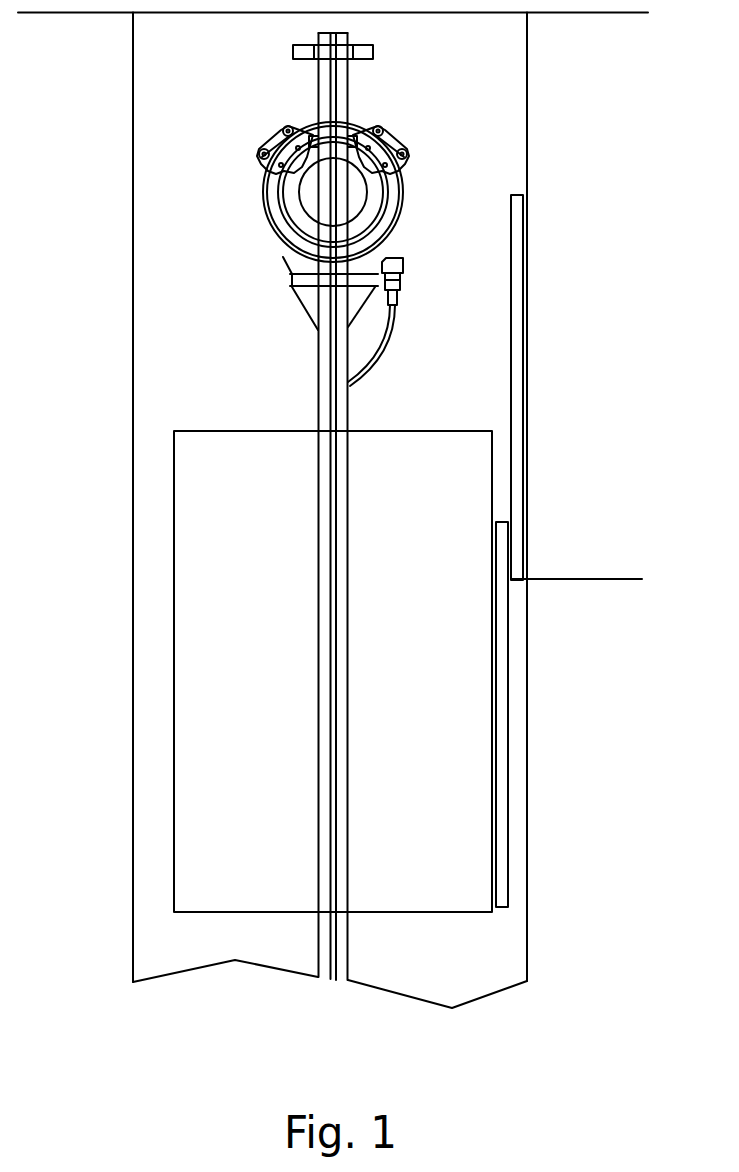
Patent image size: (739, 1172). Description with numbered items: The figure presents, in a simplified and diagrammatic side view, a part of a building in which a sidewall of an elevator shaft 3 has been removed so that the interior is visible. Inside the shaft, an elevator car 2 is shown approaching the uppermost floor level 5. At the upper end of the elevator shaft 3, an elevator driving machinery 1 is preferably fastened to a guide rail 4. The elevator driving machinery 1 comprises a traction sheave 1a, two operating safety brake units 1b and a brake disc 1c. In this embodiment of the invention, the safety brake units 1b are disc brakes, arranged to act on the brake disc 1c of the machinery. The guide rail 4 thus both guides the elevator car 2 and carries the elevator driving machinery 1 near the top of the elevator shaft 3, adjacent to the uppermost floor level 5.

The elevator driving machinery 1 is at (327, 232).
The traction sheave 1a is at (305, 207).
The safety brake units 1b is at (393, 145).
The brake disc 1c is at (395, 207).
The elevator car 2 is at (343, 610).
The elevator shaft 3 is at (155, 290).
The guide rail 4 is at (343, 409).
The uppermost floor level 5 is at (585, 579).